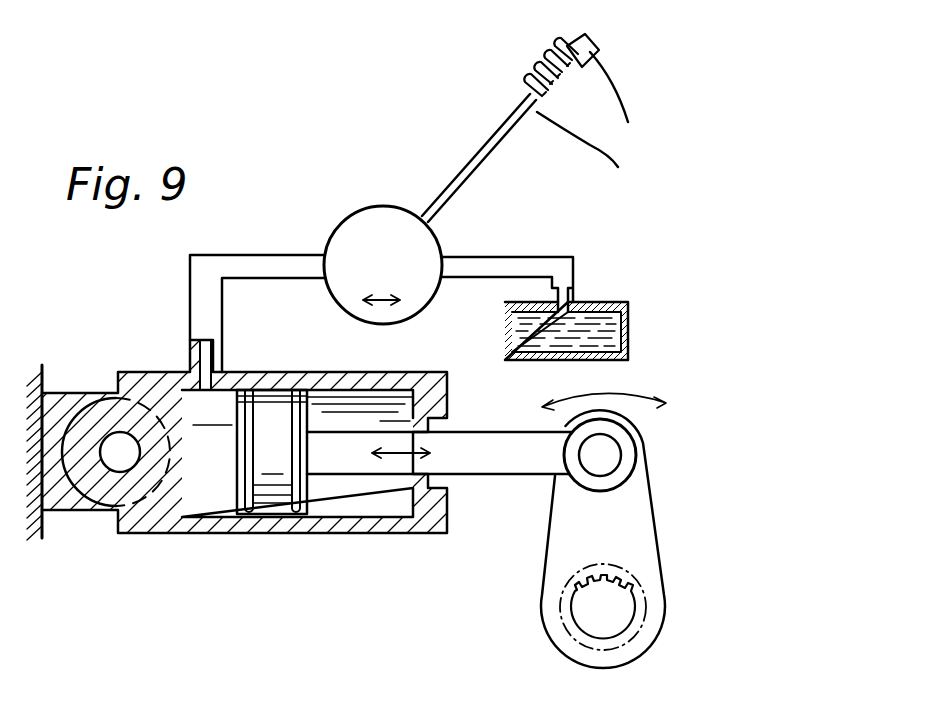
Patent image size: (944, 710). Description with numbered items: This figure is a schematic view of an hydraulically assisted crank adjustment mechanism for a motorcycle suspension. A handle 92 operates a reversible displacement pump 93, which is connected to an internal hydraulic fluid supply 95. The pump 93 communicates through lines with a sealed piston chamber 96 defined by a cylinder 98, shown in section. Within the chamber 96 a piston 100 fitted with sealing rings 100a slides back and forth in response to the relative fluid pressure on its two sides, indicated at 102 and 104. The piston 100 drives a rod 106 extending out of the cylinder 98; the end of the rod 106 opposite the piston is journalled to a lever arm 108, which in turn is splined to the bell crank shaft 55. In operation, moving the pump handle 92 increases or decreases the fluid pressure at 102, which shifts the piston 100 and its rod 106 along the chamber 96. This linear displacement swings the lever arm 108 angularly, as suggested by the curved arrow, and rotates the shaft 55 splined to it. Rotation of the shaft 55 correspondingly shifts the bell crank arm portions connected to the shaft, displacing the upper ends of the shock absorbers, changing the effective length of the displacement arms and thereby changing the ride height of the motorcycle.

The bell crank shaft 55 is at (617, 604).
The handle 92 is at (484, 178).
The reversible displacement pump 93 is at (376, 207).
The internal hydraulic fluid supply 95 is at (583, 323).
The sealed piston chamber 96 is at (420, 405).
The cylinder 98 is at (156, 372).
The piston 100 is at (268, 410).
The sealing rings 100a is at (292, 520).
The fluid pressure location 102 is at (212, 505).
The fluid pressure location 104 is at (362, 512).
The rod 106 is at (487, 478).
The lever arm 108 is at (647, 473).